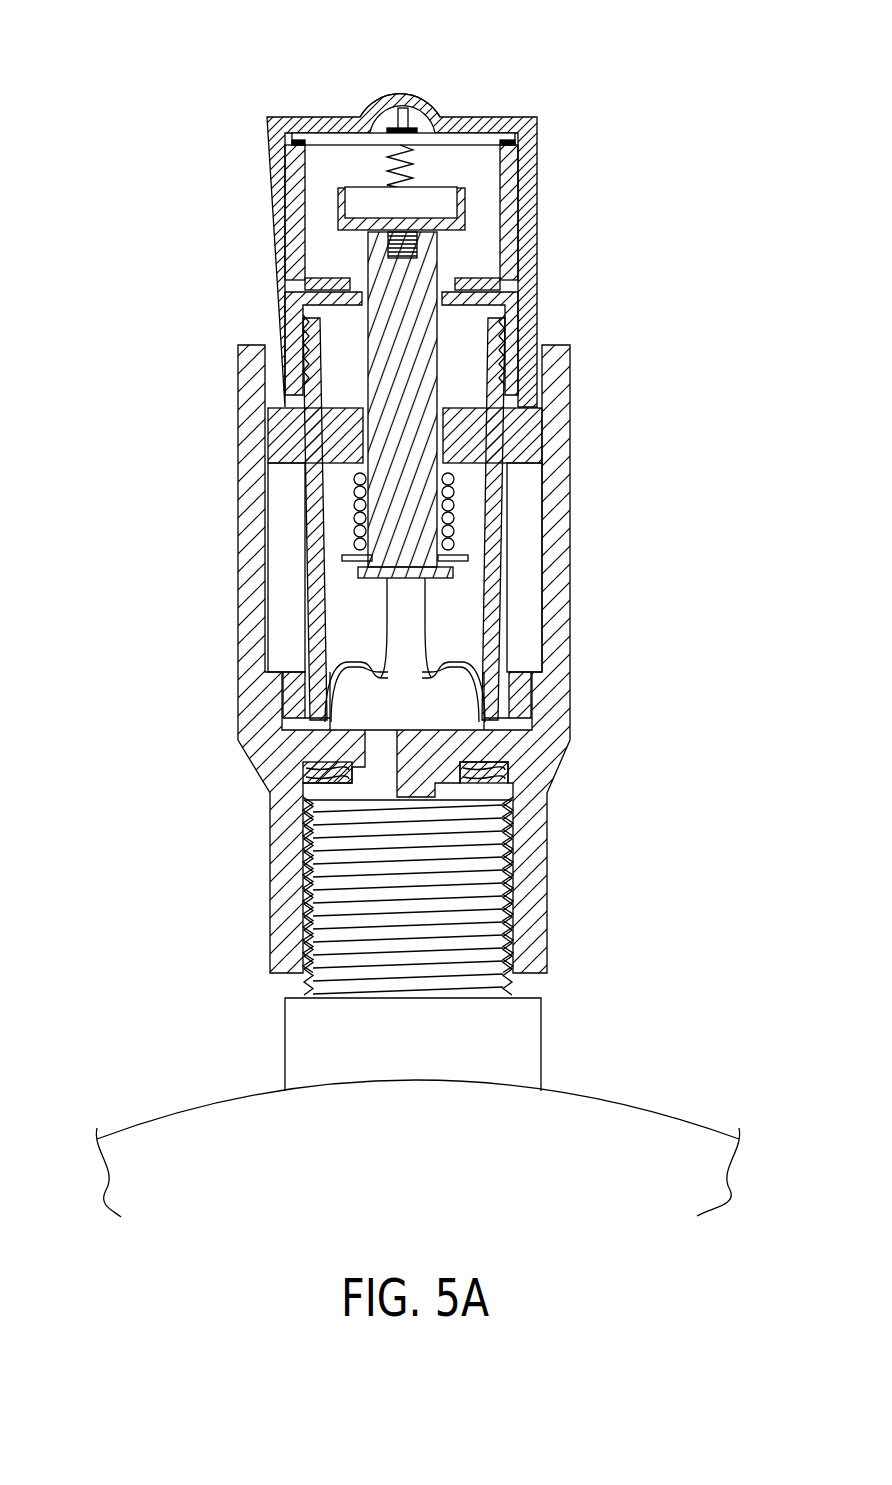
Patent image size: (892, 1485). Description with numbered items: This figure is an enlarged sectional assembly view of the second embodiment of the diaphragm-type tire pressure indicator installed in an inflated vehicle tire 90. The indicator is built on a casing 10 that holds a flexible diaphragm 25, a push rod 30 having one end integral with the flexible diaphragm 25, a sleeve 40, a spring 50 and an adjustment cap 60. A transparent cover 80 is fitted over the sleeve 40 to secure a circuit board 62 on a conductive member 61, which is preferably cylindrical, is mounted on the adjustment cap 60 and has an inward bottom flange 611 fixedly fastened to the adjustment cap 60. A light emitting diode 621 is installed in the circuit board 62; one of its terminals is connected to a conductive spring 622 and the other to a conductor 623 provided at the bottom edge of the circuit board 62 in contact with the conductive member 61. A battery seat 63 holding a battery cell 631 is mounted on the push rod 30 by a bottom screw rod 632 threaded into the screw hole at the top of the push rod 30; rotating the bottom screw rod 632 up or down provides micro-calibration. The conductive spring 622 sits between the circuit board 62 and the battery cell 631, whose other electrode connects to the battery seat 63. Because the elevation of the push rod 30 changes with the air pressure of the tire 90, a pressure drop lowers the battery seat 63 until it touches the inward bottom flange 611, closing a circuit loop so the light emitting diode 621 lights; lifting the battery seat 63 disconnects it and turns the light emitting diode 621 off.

The casing 10 is at (581, 598).
The flexible diaphragm 25 is at (483, 707).
The push rod 30 is at (370, 253).
The sleeve 40 is at (513, 522).
The spring 50 is at (452, 490).
The adjustment cap 60 is at (522, 313).
The conductive member 61 is at (513, 195).
The circuit board 62 is at (310, 133).
The battery seat 63 is at (411, 147).
The cover 80 is at (473, 118).
The tire 90 is at (630, 1119).
The inward bottom flange 611 is at (323, 277).
The light emitting diode 621 is at (401, 110).
The conductive spring 622 is at (410, 167).
The conductor 623 is at (510, 145).
The battery cell 631 is at (353, 196).
The bottom screw rod 632 is at (413, 245).